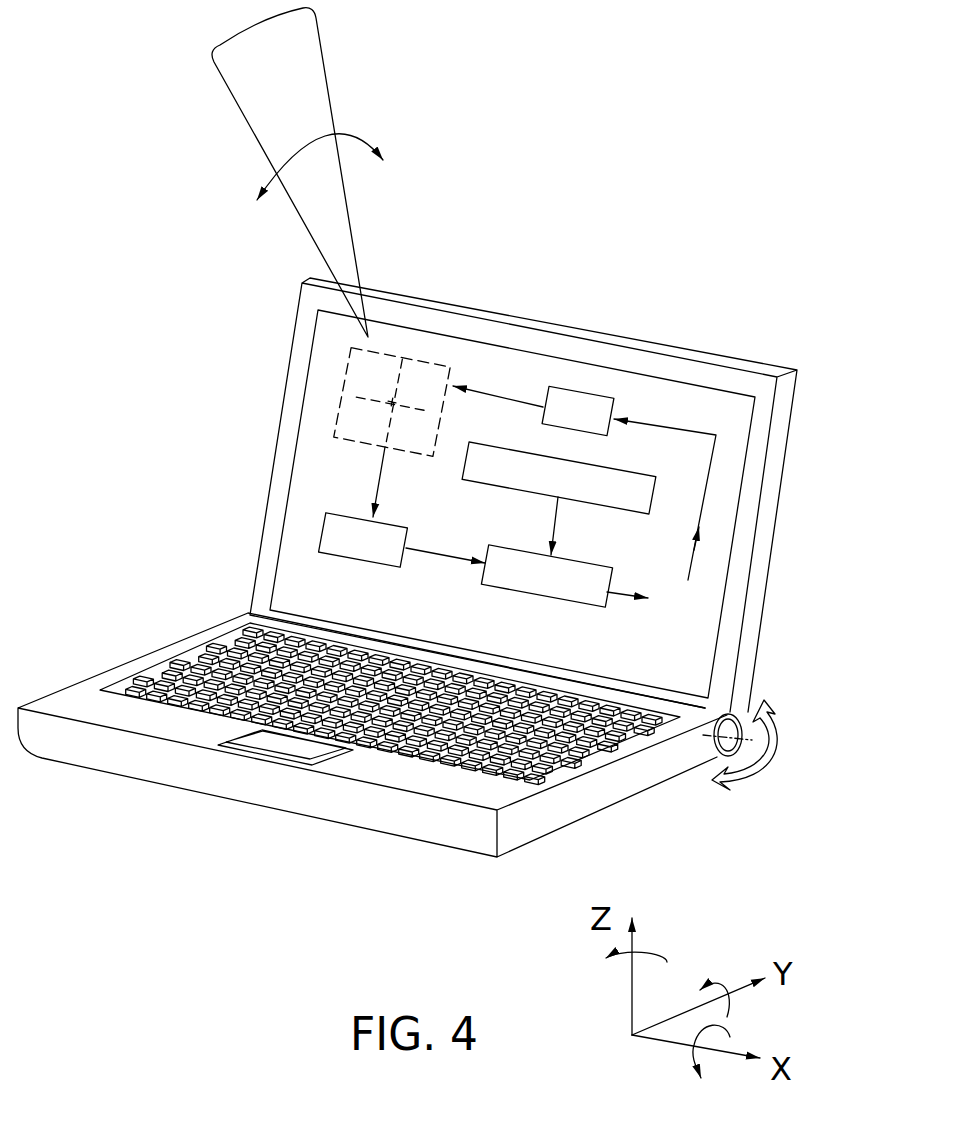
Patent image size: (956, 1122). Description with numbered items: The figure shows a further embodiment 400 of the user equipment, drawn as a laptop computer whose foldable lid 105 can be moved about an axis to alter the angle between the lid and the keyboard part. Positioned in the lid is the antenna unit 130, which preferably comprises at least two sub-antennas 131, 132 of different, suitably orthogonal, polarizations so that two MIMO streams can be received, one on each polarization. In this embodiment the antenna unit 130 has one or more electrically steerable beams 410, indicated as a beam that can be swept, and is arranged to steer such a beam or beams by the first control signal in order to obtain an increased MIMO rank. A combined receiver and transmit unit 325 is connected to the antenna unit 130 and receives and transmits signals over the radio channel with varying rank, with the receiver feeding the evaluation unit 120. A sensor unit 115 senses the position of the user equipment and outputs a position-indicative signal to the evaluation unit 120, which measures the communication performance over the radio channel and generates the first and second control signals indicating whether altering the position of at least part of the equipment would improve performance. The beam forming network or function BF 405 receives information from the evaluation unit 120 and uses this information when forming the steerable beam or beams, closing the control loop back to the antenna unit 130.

The UE embodiment with steerable beams 400 is at (432, 432).
The foldable lid 105 is at (795, 466).
The sensor unit 115 is at (626, 462).
The evaluation unit 120 is at (565, 610).
The antenna unit 130 is at (357, 382).
The first sub-antenna 131 is at (380, 427).
The second sub-antenna 132 is at (276, 416).
The receiver and transmit unit 325 is at (352, 568).
The beam forming network or function BF 405 is at (588, 387).
The ultrasonic beam 410 is at (345, 106).